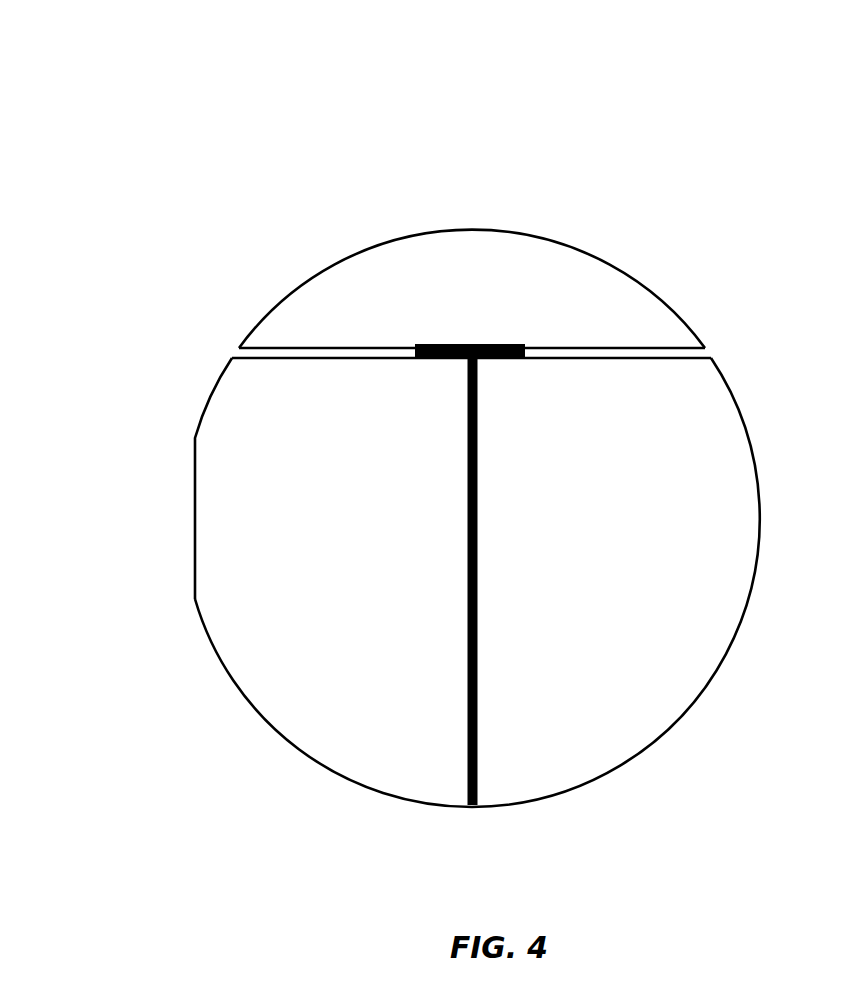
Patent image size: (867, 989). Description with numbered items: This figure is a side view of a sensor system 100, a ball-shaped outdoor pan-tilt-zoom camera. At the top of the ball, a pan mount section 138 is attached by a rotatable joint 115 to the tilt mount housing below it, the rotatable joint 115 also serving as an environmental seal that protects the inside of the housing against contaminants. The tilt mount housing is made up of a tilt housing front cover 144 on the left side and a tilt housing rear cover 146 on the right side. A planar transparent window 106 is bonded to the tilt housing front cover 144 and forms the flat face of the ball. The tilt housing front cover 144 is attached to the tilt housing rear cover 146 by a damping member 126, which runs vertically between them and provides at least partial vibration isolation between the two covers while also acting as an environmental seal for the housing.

The sensor system 100 is at (286, 100).
The transparent window 106 is at (182, 493).
The rotatable joint 115 is at (440, 345).
The damping member 126 is at (468, 652).
The pan mount section 138 is at (603, 293).
The tilt housing front cover 144 is at (288, 648).
The tilt housing rear cover 146 is at (668, 463).